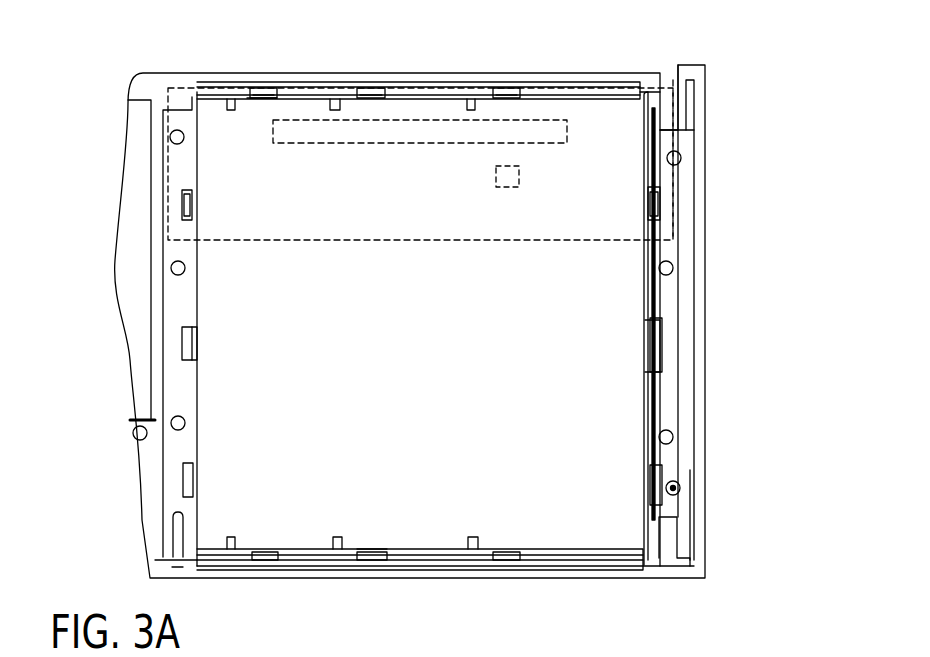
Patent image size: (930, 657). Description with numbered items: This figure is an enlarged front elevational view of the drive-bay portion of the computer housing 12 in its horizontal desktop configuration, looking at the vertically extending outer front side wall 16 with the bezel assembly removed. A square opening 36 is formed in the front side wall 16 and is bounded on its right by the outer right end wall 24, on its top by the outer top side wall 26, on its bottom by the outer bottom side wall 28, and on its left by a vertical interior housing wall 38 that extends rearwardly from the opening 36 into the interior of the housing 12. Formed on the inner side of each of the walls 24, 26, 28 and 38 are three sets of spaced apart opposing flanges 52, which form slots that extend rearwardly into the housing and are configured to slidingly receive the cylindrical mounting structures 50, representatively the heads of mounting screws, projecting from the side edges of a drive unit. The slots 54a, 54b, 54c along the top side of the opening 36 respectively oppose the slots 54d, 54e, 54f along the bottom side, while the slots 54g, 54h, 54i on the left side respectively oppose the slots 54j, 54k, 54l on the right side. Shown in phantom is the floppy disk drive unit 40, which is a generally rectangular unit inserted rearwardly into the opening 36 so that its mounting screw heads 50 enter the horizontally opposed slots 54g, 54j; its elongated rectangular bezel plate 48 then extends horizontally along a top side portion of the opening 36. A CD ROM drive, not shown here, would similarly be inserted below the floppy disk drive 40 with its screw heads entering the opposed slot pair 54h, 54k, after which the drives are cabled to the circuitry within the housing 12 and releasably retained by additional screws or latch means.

The housing 12 is at (692, 63).
The outer front side wall 16 is at (148, 483).
The outer right end wall 24 is at (705, 298).
The outer top side wall 26 is at (567, 72).
The outer bottom side wall 28 is at (577, 582).
The square opening 36 is at (614, 404).
The vertical interior housing wall 38 is at (168, 328).
The floppy disk drive unit 40 is at (513, 247).
The bezel plate 48 is at (313, 232).
The cylindrical mounting structures 50 is at (192, 203).
The opposing flanges 52 is at (277, 99).
The slot 54a is at (262, 90).
The slot 54b is at (363, 90).
The slot 54c is at (507, 90).
The slot 54d is at (263, 560).
The slot 54e is at (375, 562).
The slot 54f is at (508, 560).
The slot 54g is at (190, 203).
The slot 54h is at (192, 340).
The slot 54i is at (192, 480).
The slot 54j is at (662, 200).
The slot 54k is at (660, 340).
The slot 54l is at (658, 473).